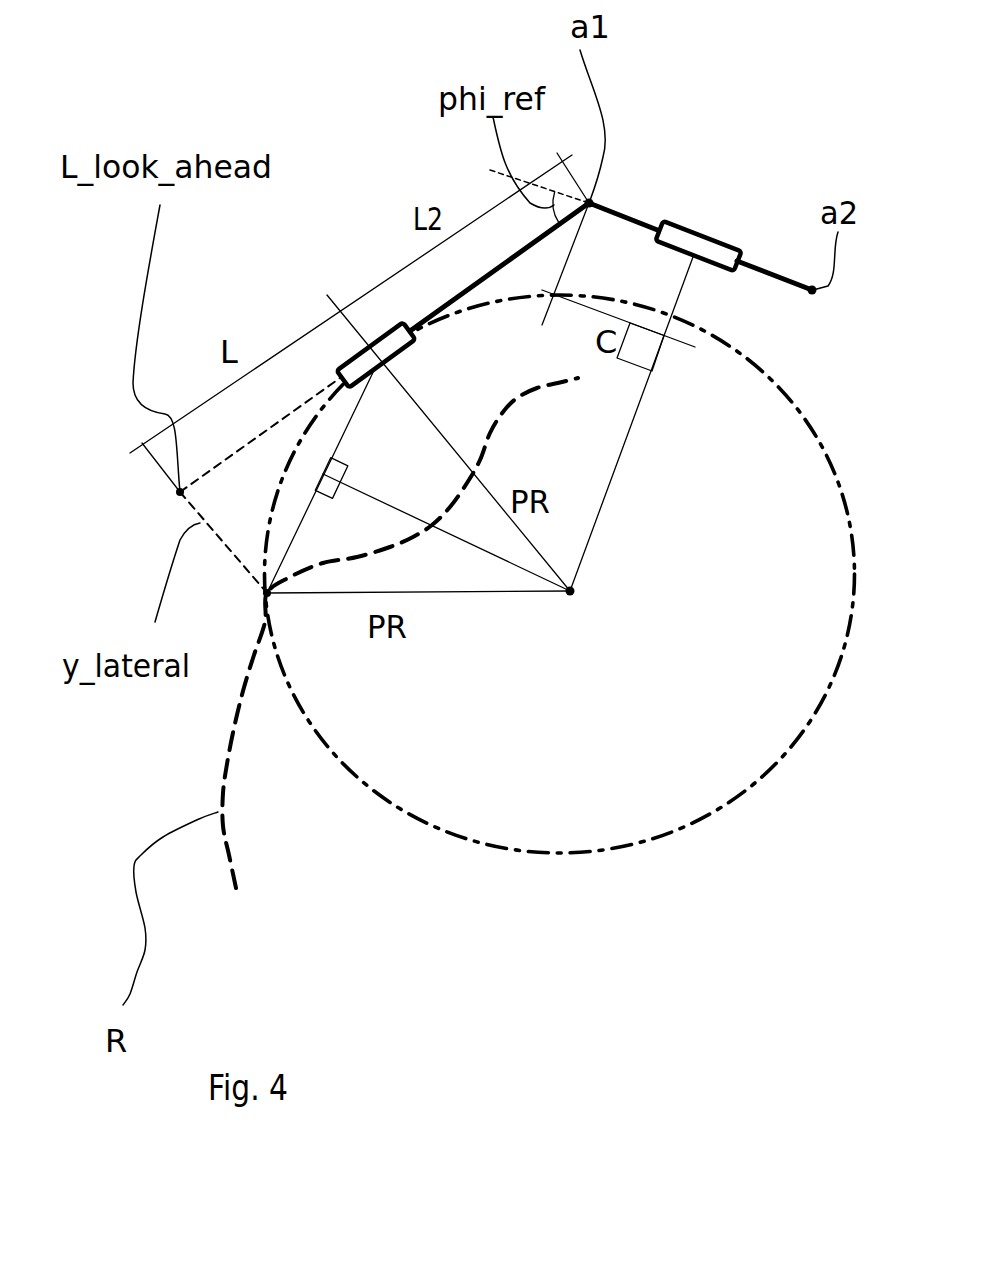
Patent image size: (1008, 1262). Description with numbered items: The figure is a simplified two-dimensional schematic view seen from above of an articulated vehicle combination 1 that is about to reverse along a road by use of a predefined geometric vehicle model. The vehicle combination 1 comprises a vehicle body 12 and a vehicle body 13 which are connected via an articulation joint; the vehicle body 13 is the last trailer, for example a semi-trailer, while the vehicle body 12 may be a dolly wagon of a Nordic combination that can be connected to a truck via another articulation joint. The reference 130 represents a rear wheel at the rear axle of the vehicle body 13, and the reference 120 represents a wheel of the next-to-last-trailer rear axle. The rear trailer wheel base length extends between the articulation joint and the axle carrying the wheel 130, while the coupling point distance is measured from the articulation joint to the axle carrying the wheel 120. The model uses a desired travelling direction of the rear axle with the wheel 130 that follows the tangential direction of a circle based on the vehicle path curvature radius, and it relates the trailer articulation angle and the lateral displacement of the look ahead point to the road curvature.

The articulated vehicle combination 1 is at (770, 272).
The vehicle body 13 is at (430, 316).
The rear wheel 130 is at (338, 361).
The vehicle body 12 is at (624, 217).
The wheel 120 is at (728, 238).